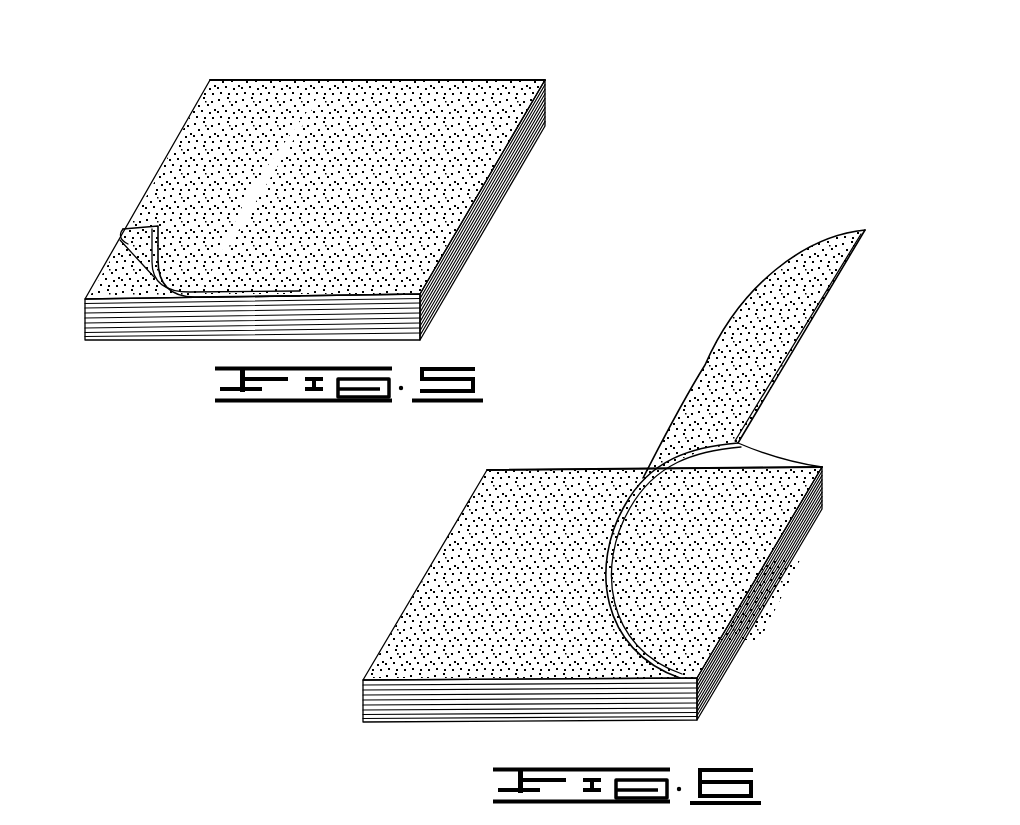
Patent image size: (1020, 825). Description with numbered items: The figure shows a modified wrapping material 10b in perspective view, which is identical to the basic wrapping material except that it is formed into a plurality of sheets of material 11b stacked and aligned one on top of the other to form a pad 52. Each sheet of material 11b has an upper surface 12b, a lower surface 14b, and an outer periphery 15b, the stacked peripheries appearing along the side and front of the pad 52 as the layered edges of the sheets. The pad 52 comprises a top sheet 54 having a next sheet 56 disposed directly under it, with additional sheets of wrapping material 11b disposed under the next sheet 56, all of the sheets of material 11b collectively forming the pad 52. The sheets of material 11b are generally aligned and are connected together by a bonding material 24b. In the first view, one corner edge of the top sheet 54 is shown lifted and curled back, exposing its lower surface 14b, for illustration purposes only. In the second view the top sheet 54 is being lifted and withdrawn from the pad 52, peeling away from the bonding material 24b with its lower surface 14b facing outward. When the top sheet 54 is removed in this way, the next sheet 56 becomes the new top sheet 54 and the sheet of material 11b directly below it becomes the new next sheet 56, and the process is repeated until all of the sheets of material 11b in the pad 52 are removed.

In FIG. 5, the wrapping material 10b is at (326, 177).
In FIG. 6, the wrapping material 10b is at (611, 493).
In FIG. 5, the sheet of material 11b is at (329, 161).
In FIG. 6, the sheet of material 11b is at (598, 550).
In FIG. 5, the upper surface 12b is at (487, 108).
In FIG. 6, the upper surface 12b is at (728, 530).
In FIG. 5, the lower surface 14b is at (143, 248).
In FIG. 6, the lower surface 14b is at (792, 320).
In FIG. 5, the outer periphery 15b is at (450, 248).
In FIG. 6, the outer periphery 15b is at (648, 690).
In FIG. 5, the bonding material 24b is at (432, 172).
In FIG. 6, the bonding material 24b is at (522, 560).
In FIG. 5, the pad 52 is at (262, 80).
In FIG. 6, the pad 52 is at (513, 470).
In FIG. 5, the top sheet 54 is at (220, 138).
In FIG. 6, the top sheet 54 is at (693, 630).
In FIG. 5, the next sheet 56 is at (120, 280).
In FIG. 6, the next sheet 56 is at (425, 630).